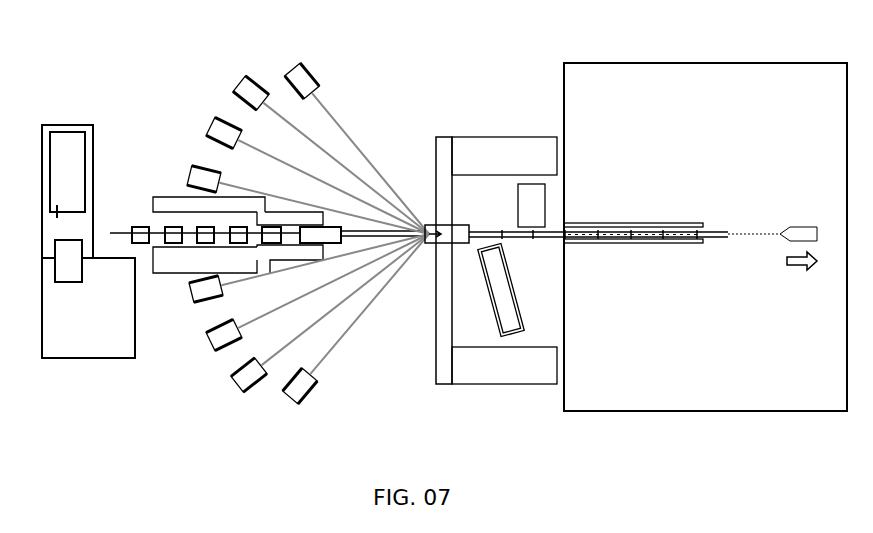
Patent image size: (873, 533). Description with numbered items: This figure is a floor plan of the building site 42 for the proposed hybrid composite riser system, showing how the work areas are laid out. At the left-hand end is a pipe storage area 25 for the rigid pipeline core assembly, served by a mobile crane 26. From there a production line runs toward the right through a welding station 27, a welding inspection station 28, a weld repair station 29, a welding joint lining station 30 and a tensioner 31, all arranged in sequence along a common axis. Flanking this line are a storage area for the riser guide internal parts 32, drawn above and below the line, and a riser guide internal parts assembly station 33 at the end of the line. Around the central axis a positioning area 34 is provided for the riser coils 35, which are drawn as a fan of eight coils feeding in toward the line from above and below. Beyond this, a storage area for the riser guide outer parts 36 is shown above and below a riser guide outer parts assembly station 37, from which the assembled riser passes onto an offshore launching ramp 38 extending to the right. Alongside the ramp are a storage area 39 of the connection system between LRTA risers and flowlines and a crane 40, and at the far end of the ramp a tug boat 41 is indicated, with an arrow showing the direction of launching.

The pipe storage area 25 is at (52, 221).
The mobile crane 26 is at (55, 268).
The welding station 27 is at (140, 235).
The welding inspection station 28 is at (173, 235).
The weld repair station 29 is at (205, 235).
The welding joint lining station 30 is at (238, 235).
The tensioner 31 is at (271, 235).
The storage area for the riser guide internal parts 32 is at (238, 235).
The riser guide internal parts assembly station 33 is at (320, 235).
The positioning area 34 is at (325, 233).
The coils 35 is at (293, 68).
The storage area for the riser guide outer parts 36 is at (496, 260).
The riser guide outer parts assembly station 37 is at (447, 234).
The offshore launching ramp 38 is at (546, 240).
The storage area of the connection system 39 is at (501, 289).
The crane 40 is at (518, 198).
The tug boat 41 is at (772, 248).
The building site 42 is at (374, 394).